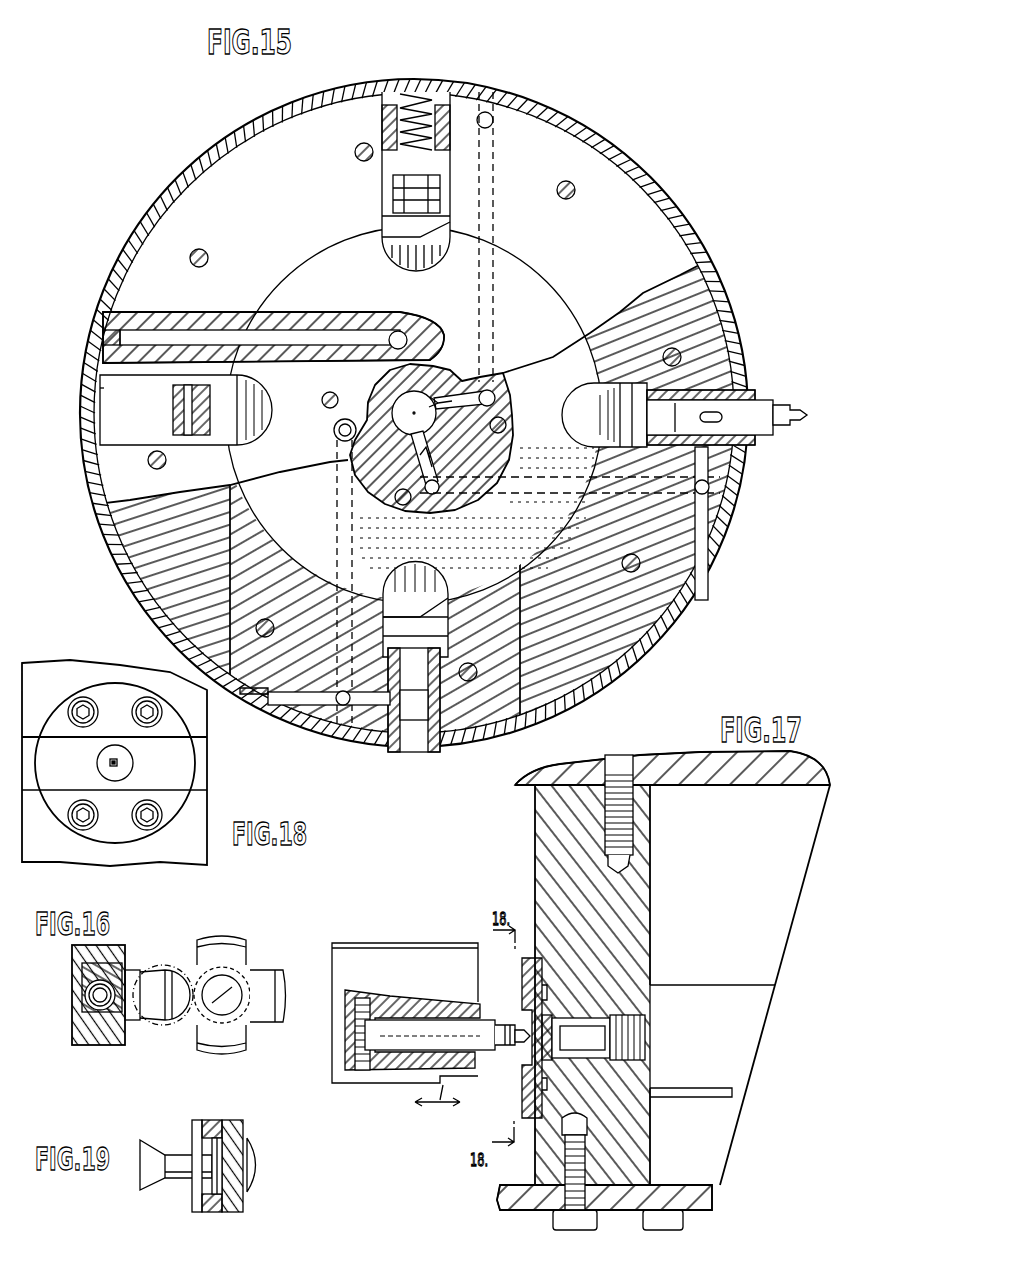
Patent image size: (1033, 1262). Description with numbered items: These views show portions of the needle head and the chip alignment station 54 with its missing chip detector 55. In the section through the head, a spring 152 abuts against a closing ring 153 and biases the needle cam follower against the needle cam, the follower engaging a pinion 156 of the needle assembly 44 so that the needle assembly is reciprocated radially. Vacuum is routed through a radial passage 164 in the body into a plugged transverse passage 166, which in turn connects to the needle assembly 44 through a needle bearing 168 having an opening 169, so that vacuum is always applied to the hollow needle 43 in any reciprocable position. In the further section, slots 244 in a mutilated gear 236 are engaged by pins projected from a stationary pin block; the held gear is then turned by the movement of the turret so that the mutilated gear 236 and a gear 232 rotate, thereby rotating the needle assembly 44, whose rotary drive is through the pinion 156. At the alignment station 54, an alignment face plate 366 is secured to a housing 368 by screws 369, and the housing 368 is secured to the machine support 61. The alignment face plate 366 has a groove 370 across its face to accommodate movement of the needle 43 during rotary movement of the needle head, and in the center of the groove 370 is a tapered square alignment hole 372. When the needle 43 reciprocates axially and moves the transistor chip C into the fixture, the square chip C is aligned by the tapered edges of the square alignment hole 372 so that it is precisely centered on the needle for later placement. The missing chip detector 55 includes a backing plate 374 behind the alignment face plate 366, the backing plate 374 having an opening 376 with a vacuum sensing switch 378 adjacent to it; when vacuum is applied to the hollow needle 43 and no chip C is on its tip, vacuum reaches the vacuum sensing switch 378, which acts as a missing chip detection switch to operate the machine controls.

In FIG. 15, the closing ring 153 is at (428, 82).
In FIG. 15, the spring 152 is at (452, 92).
In FIG. 15, the radial passage 164 is at (358, 528).
In FIG. 15, the plugged transverse passage 166 is at (302, 706).
In FIG. 15, the needle bearing 168 is at (440, 745).
In FIG. 15, the opening 169 is at (414, 710).
In FIG. 18, the alignment face plate 366 is at (172, 808).
In FIG. 17, the alignment face plate 366 is at (520, 1105).
In FIG. 18, the housing 368 is at (196, 848).
In FIG. 17, the housing 368 is at (636, 955).
In FIG. 18, the screws 369 is at (160, 717).
In FIG. 18, the groove 370 is at (185, 780).
In FIG. 18, the square alignment hole 372 is at (118, 764).
In FIG. 19, the square alignment hole 372 is at (203, 1120).
In FIG. 17, the square alignment hole 372 is at (555, 1015).
In FIG. 19, the backing plate 374 is at (245, 1132).
In FIG. 19, the opening 376 is at (245, 1200).
In FIG. 19, the vacuum sensing switch 378 is at (258, 1167).
In FIG. 17, the vacuum sensing switch 378 is at (605, 1030).
In FIG. 16, the pinion 156 is at (152, 960).
In FIG. 16, the mutilated gear 236 is at (237, 935).
In FIG. 16, the slots 244 is at (245, 965).
In FIG. 16, the gear 232 is at (250, 1020).
In FIG. 19, the needle 43 is at (185, 1180).
In FIG. 17, the needle 43 is at (522, 1042).
In FIG. 17, the needle assembly 44 is at (429, 990).
In FIG. 17, the alignment station 54 is at (509, 999).
In FIG. 17, the missing chip detector 55 is at (750, 1054).
In FIG. 17, the machine support 61 is at (700, 1203).
In FIG. 19, the transistor chip C is at (212, 1148).